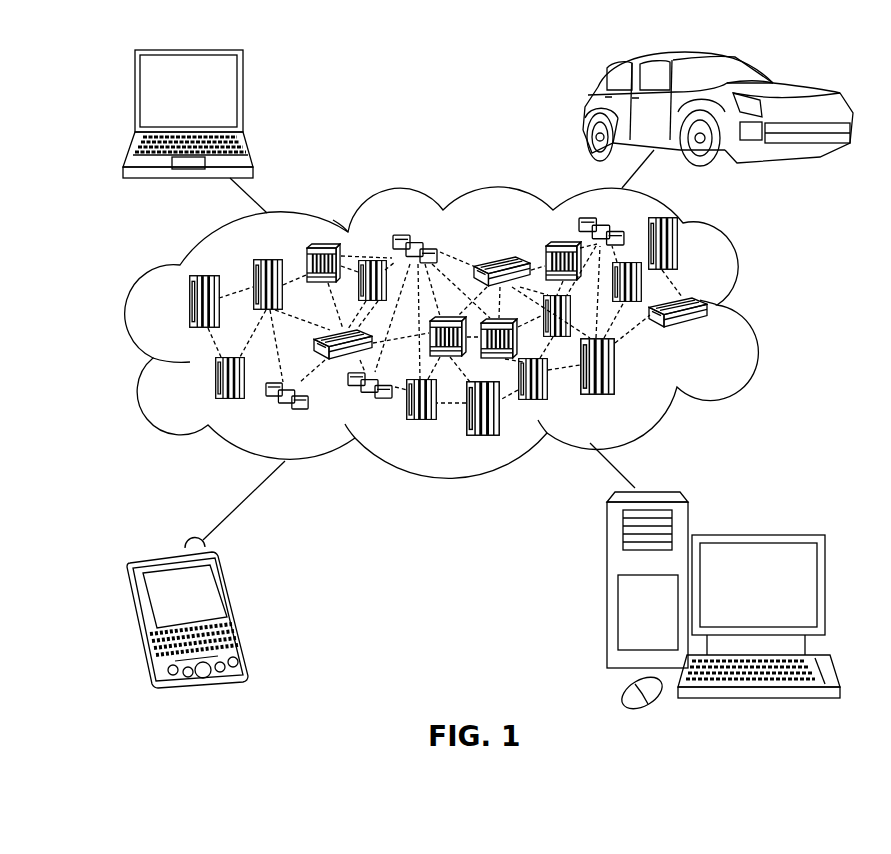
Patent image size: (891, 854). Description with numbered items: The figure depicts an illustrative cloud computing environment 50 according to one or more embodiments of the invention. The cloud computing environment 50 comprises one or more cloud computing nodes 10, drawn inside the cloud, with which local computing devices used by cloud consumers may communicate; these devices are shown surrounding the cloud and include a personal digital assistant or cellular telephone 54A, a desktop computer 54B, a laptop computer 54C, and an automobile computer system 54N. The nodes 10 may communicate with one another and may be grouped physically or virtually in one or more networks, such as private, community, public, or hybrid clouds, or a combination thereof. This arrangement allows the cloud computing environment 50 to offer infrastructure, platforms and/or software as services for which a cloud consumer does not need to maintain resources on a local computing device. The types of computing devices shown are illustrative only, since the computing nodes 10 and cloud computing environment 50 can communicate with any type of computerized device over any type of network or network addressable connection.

The cloud computing nodes 10 is at (716, 335).
The cloud computing environment 50 is at (757, 305).
The personal digital assistant or cellular telephone 54A is at (237, 607).
The desktop computer 54B is at (755, 533).
The laptop computer 54C is at (244, 97).
The automobile computer system 54N is at (584, 108).